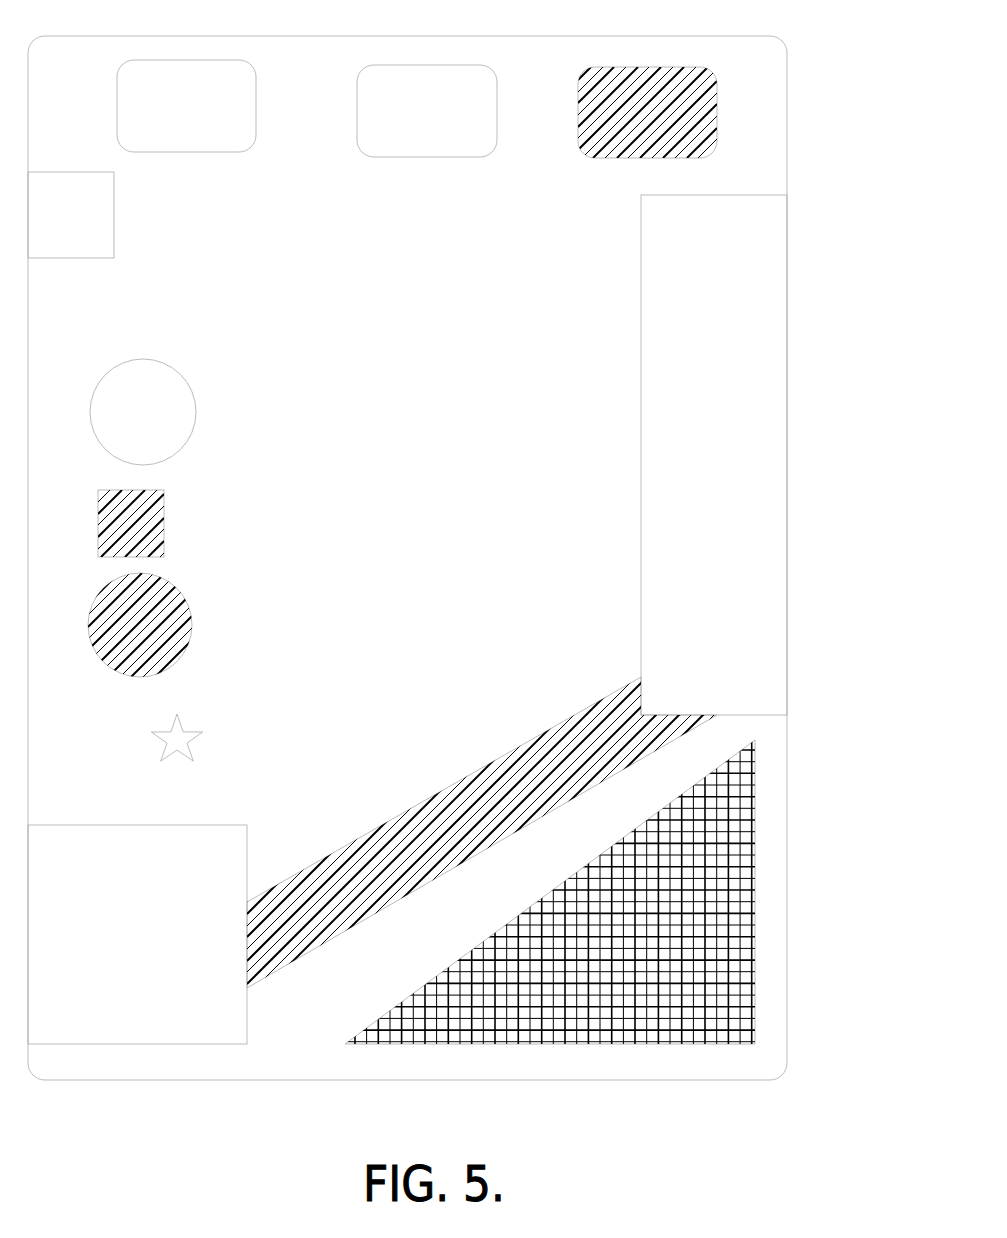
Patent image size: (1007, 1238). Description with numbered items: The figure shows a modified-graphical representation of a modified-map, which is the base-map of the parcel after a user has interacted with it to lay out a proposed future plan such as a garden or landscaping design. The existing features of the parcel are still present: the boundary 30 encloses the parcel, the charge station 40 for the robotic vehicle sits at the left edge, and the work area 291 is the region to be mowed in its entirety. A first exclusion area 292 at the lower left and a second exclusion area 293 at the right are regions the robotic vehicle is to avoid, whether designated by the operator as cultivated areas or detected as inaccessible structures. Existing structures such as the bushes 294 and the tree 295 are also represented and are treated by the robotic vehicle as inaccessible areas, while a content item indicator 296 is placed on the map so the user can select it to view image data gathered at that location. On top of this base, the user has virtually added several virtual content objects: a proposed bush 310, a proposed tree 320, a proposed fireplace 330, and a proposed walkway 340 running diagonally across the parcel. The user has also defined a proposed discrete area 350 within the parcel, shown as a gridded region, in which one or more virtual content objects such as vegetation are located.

The boundary 30 is at (793, 482).
The charge station 40 is at (71, 215).
The work area 291 is at (764, 148).
The first exclusion area 292 is at (199, 839).
The second exclusion area 293 is at (685, 513).
The bush 294 is at (186, 150).
The tree 295 is at (158, 411).
The content item indicator 296 is at (177, 738).
The proposed bush 310 is at (655, 128).
The proposed tree 320 is at (167, 631).
The proposed fireplace 330 is at (143, 531).
The proposed walkway 340 is at (575, 738).
The proposed discrete area 350 is at (508, 965).